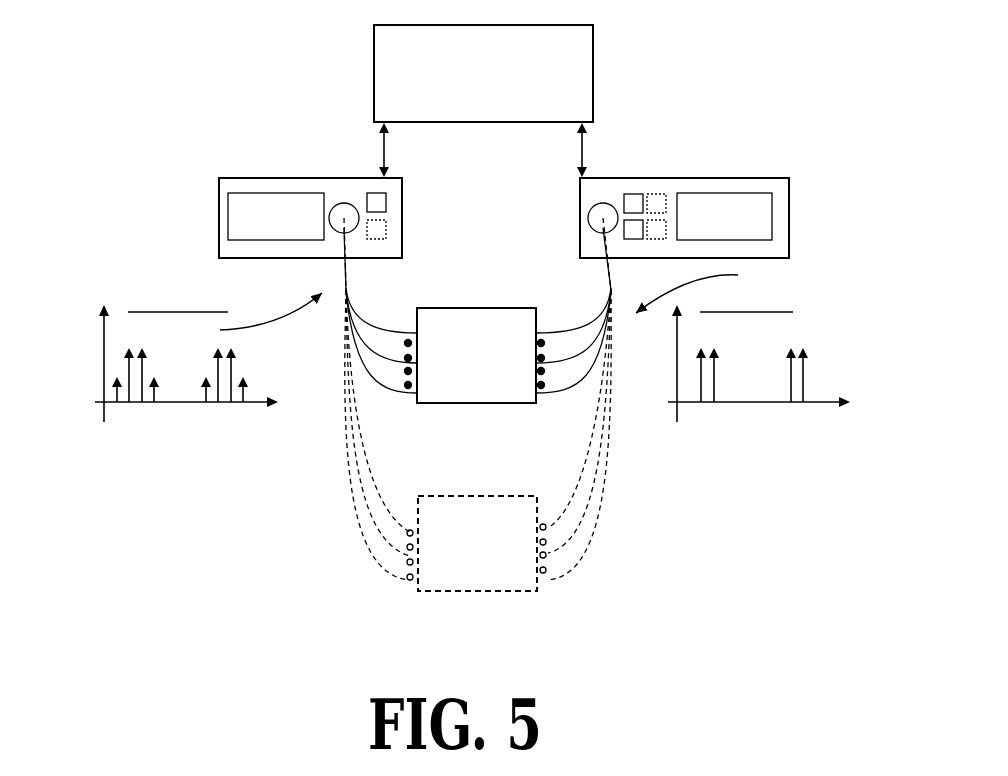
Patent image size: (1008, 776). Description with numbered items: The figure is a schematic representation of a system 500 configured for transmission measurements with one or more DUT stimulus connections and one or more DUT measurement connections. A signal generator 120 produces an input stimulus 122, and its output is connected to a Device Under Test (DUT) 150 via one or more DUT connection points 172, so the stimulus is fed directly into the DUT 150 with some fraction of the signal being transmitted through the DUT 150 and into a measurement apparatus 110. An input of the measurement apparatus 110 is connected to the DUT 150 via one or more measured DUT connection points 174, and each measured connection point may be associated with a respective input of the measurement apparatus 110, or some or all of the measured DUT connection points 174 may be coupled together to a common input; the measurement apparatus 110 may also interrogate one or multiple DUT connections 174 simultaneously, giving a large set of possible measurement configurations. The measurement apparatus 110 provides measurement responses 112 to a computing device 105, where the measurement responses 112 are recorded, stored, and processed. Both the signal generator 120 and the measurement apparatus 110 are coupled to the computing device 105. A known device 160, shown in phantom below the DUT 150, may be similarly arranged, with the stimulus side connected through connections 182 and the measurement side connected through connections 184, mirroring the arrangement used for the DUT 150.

The system 500 is at (285, 98).
The computing device 105 is at (504, 116).
The measurement apparatus 110 is at (277, 177).
The signal generator 120 is at (712, 177).
The measurement response 112 is at (126, 278).
The input stimulus 122 is at (800, 287).
The Device Under Test (DUT) 150 is at (458, 381).
The known device 160 is at (458, 585).
The DUT connection points 172 is at (595, 305).
The measured DUT connection points 174 is at (358, 302).
The stimulus cables to known device 182 is at (578, 497).
The response cables from known device 184 is at (372, 488).